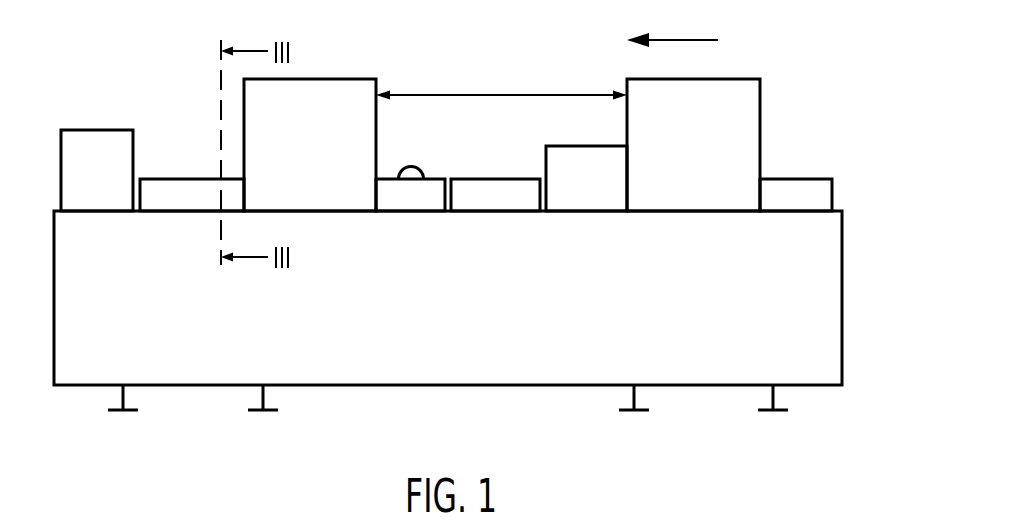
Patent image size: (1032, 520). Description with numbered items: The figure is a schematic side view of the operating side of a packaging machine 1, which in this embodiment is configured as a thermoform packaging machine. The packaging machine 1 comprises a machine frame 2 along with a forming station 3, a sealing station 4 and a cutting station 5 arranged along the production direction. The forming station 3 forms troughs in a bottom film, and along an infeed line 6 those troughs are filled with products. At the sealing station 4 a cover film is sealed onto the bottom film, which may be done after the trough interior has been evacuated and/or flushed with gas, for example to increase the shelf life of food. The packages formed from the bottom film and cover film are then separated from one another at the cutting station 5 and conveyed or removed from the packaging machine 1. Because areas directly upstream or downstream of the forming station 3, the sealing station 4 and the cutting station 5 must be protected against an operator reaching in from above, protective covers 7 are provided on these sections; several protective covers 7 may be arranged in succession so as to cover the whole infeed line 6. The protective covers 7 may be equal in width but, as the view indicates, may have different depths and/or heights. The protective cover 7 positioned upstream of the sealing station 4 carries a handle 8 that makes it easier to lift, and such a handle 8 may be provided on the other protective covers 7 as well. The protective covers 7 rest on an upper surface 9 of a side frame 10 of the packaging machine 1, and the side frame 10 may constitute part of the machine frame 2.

The packaging machine 1 is at (566, 55).
The machine frame 2 is at (853, 278).
The forming station 3 is at (702, 155).
The sealing station 4 is at (318, 162).
The cutting station 5 is at (105, 190).
The infeed line 6 is at (501, 81).
The protective covers 7 is at (155, 178).
The handle 8 is at (410, 167).
The upper surface 9 is at (186, 212).
The side frame 10 is at (433, 318).